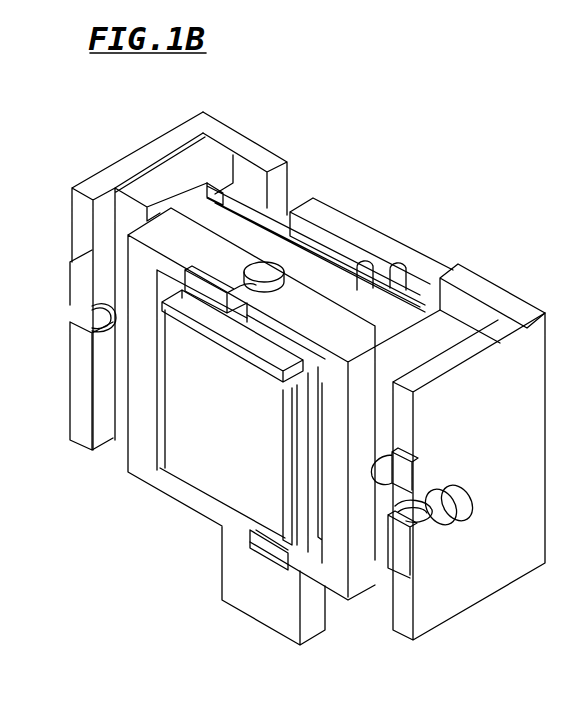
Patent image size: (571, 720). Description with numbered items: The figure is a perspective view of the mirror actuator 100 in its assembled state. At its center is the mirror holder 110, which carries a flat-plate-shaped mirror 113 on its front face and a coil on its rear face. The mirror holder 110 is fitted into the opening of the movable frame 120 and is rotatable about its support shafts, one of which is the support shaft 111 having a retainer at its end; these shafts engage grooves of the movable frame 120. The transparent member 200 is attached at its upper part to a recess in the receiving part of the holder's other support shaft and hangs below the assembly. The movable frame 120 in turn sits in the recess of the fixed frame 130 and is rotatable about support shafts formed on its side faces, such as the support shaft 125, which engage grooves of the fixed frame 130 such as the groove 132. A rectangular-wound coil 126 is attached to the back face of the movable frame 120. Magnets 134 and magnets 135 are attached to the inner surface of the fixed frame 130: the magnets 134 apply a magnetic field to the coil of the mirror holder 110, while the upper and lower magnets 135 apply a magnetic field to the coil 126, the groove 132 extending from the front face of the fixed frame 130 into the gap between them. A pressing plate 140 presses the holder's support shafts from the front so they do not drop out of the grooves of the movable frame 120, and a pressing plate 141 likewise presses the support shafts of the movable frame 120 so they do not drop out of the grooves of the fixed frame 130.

The mirror actuator 100 is at (437, 143).
The mirror holder 110 is at (283, 361).
The support shaft 111 is at (357, 267).
The mirror 113 is at (185, 445).
The movable frame 120 is at (167, 233).
The support shaft 125 is at (459, 485).
The coil 126 is at (257, 218).
The fixed frame 130 is at (460, 602).
The groove 132 is at (68, 322).
The magnets 134 is at (392, 270).
The magnets 135 is at (207, 153).
The pressing plate 140 is at (260, 347).
The pressing plate 141 is at (83, 357).
The transparent member 200 is at (268, 618).